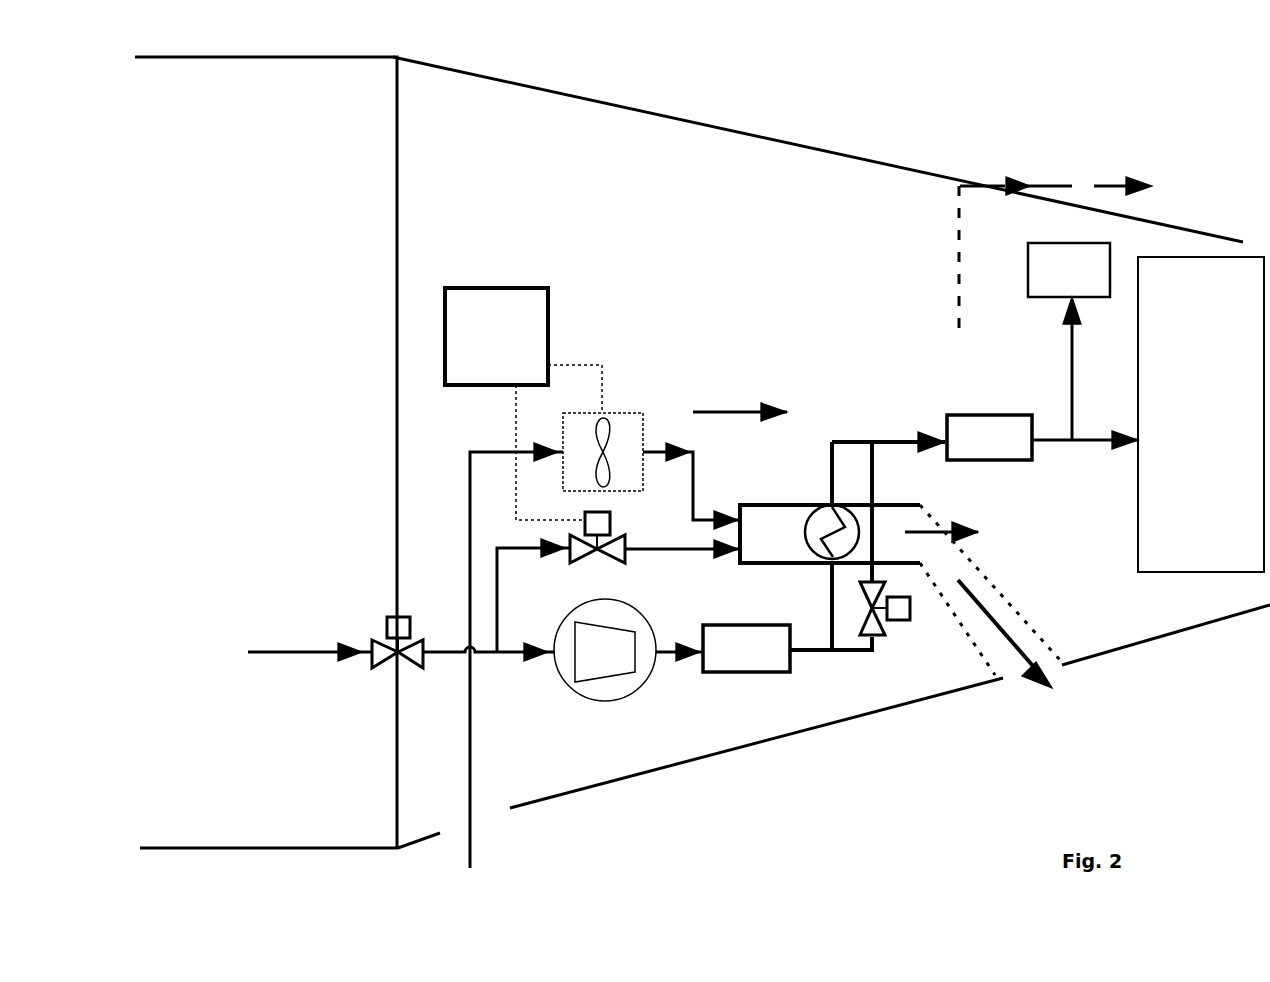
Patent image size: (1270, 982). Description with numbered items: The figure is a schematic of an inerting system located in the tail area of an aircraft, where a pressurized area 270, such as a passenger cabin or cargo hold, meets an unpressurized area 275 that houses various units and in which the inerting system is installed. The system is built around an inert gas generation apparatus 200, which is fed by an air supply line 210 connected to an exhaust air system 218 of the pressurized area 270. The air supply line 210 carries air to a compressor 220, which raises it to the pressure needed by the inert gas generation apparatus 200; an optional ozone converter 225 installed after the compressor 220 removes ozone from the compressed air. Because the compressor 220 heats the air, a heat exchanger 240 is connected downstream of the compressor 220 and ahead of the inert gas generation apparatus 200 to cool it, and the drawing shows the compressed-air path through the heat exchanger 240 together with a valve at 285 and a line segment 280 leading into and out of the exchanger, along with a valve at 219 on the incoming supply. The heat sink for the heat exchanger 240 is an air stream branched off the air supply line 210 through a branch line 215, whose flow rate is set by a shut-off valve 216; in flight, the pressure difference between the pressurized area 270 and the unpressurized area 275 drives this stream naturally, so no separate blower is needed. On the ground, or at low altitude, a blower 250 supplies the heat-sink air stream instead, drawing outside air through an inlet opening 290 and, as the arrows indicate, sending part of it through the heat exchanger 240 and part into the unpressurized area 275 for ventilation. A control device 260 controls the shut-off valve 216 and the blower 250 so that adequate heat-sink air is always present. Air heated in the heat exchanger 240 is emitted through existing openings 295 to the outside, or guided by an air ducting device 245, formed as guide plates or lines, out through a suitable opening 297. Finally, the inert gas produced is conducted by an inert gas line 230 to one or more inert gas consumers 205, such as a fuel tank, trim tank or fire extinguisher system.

The inert gas generation apparatus 200 is at (989, 437).
The inert gas consumer 205 is at (1146, 407).
The air supply line 210 is at (490, 657).
The branch line 215 is at (533, 595).
The shut-off valve 216 is at (655, 550).
The exhaust air system 218 is at (295, 639).
The inlet valve 219 is at (385, 654).
The compressor 220 is at (628, 665).
The ozone converter 225 is at (746, 648).
The inert gas line 230 is at (1085, 373).
The heat exchanger 240 is at (859, 534).
The air ducting device 245 is at (990, 590).
The blower 250 is at (675, 456).
The control device 260 is at (523, 404).
The pressurized area 270 is at (287, 452).
The unpressurized area 275 is at (831, 432).
The return line 280 is at (831, 622).
The control valve 285 is at (888, 540).
The inlet opening 290 is at (516, 655).
The opening 295 is at (1055, 240).
The opening 297 is at (1009, 648).